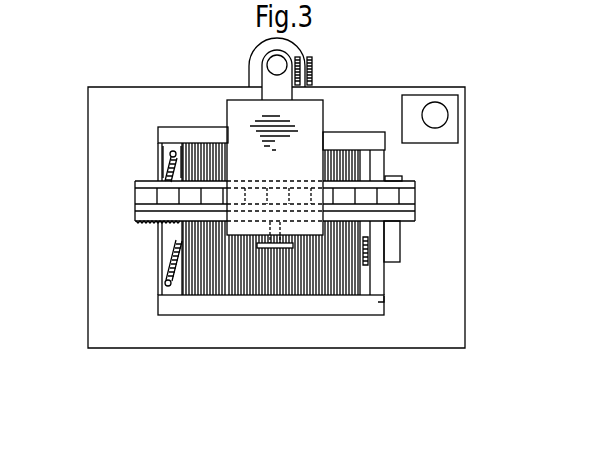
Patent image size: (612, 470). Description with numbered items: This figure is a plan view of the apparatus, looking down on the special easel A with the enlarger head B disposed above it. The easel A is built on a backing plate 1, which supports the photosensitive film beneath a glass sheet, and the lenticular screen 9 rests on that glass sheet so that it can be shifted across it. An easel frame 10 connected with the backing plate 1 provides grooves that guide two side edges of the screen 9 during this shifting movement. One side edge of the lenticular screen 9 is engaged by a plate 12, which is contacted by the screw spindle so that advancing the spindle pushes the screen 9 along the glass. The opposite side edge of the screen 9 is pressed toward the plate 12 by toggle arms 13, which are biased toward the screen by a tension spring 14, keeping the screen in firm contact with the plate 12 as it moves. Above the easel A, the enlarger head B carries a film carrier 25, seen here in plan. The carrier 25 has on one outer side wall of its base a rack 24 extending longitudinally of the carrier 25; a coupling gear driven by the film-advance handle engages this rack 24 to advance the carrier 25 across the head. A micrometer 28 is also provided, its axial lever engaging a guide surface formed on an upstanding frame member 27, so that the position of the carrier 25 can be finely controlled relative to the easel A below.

The backing plate 1 is at (158, 286).
The lenticular screen 9 is at (333, 284).
The easel frame 10 is at (368, 137).
The plate 12 is at (363, 283).
The toggle arms 13 is at (163, 163).
The tension spring 14 is at (165, 173).
The rack 24 is at (143, 222).
The film carrier 25 is at (415, 204).
The upstanding frame member 27 is at (413, 184).
The micrometer 28 is at (272, 249).
The easel A is at (384, 301).
The enlarger head B is at (308, 122).